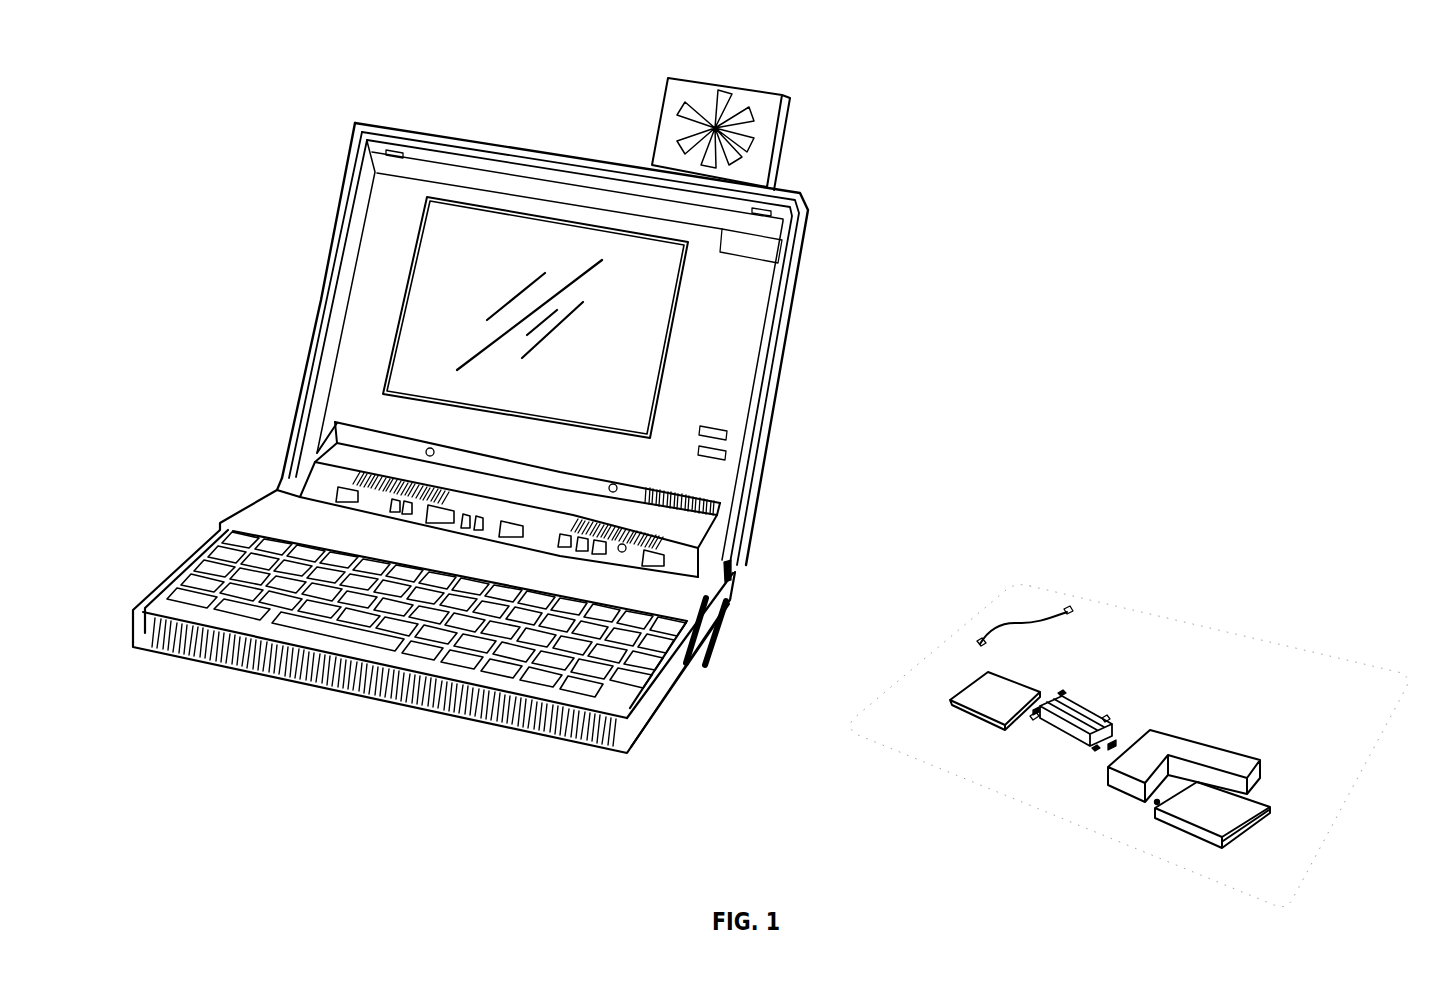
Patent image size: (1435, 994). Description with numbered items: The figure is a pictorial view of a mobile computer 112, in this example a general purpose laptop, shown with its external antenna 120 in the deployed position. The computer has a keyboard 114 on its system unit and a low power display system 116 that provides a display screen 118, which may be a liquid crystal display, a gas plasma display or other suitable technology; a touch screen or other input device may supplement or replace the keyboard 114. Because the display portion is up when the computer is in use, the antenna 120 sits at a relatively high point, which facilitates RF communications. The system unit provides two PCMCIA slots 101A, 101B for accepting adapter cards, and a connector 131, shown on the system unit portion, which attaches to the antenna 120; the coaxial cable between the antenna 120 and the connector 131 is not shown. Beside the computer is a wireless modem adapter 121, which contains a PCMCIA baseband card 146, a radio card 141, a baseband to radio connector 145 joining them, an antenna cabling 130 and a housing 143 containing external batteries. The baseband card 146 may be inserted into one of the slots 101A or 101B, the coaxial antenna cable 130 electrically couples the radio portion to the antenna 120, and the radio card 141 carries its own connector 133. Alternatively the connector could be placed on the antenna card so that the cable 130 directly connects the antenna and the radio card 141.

The mobile computer 112 is at (786, 350).
The keyboard 114 is at (410, 597).
The low power display system 116 is at (303, 403).
The display screen 118 is at (475, 293).
The external antenna 120 is at (752, 90).
The wireless modem adapter 121 is at (1012, 600).
The antenna cabling 130 is at (1032, 623).
The connector 131 is at (728, 570).
The PCMCIA slot 101A is at (733, 593).
The PCMCIA slot 101B is at (727, 617).
The connector 133 is at (1157, 802).
The radio card 141 is at (1213, 807).
The housing 143 is at (1185, 747).
The baseband to radio connector 145 is at (1057, 733).
The PCMCIA baseband card 146 is at (990, 698).